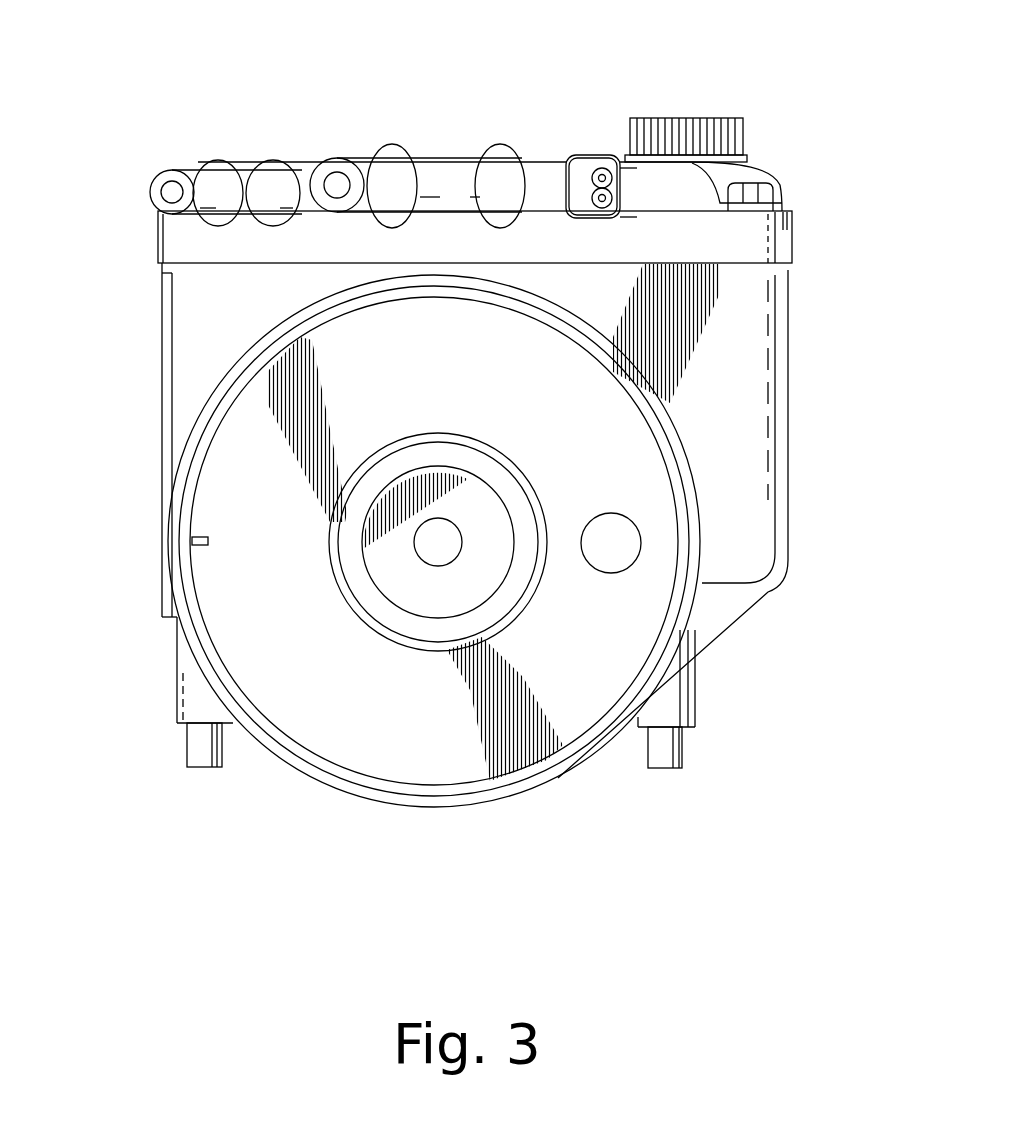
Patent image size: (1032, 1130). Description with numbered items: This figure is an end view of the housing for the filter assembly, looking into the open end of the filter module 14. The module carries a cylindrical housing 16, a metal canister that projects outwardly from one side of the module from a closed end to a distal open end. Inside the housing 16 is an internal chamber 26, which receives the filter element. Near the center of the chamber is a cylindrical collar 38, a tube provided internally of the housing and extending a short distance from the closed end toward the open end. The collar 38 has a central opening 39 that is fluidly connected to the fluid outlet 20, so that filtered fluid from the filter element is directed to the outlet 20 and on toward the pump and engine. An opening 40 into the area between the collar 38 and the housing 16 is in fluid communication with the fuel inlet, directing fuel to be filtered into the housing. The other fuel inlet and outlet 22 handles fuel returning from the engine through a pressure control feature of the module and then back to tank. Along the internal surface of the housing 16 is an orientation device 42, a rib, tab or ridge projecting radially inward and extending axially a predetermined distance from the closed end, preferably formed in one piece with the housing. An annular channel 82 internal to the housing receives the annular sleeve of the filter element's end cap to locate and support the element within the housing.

The filter module 14 is at (790, 325).
The housing 16 is at (683, 433).
The fluid outlet 20 is at (253, 183).
The fuel inlet and outlet 22 is at (449, 182).
The internal chamber 26 is at (250, 490).
The collar 38 is at (425, 617).
The central opening 39 is at (465, 621).
The opening 40 is at (637, 522).
The orientation device 42 is at (208, 540).
The annular channel 82 is at (393, 633).